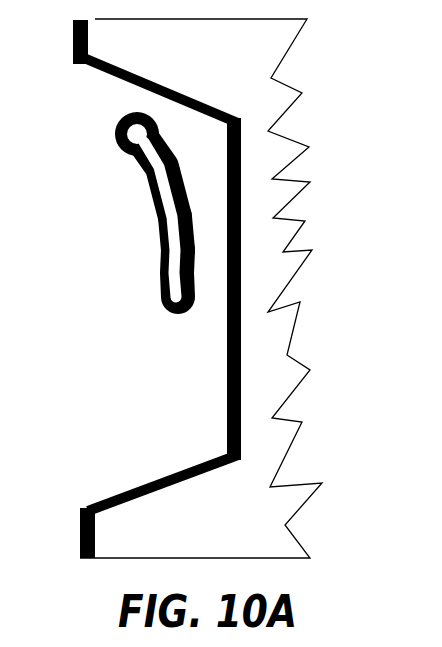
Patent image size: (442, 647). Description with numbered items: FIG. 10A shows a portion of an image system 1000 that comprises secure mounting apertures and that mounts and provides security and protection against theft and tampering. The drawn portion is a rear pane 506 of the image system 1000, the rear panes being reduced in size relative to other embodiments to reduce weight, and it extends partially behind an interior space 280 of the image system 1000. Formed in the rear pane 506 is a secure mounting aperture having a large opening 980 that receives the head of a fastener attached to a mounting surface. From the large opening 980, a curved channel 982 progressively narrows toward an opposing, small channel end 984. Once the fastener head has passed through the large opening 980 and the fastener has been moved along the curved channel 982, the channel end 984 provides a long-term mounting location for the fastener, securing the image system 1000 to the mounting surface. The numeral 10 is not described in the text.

The golf club head 10 is at (228, 288).
The interior space 280 is at (232, 84).
The rear panes 506 is at (183, 409).
The large opening 980 is at (104, 120).
The curved channel 982 is at (153, 208).
The channel end 984 is at (133, 292).
The image system 1000 is at (331, 126).